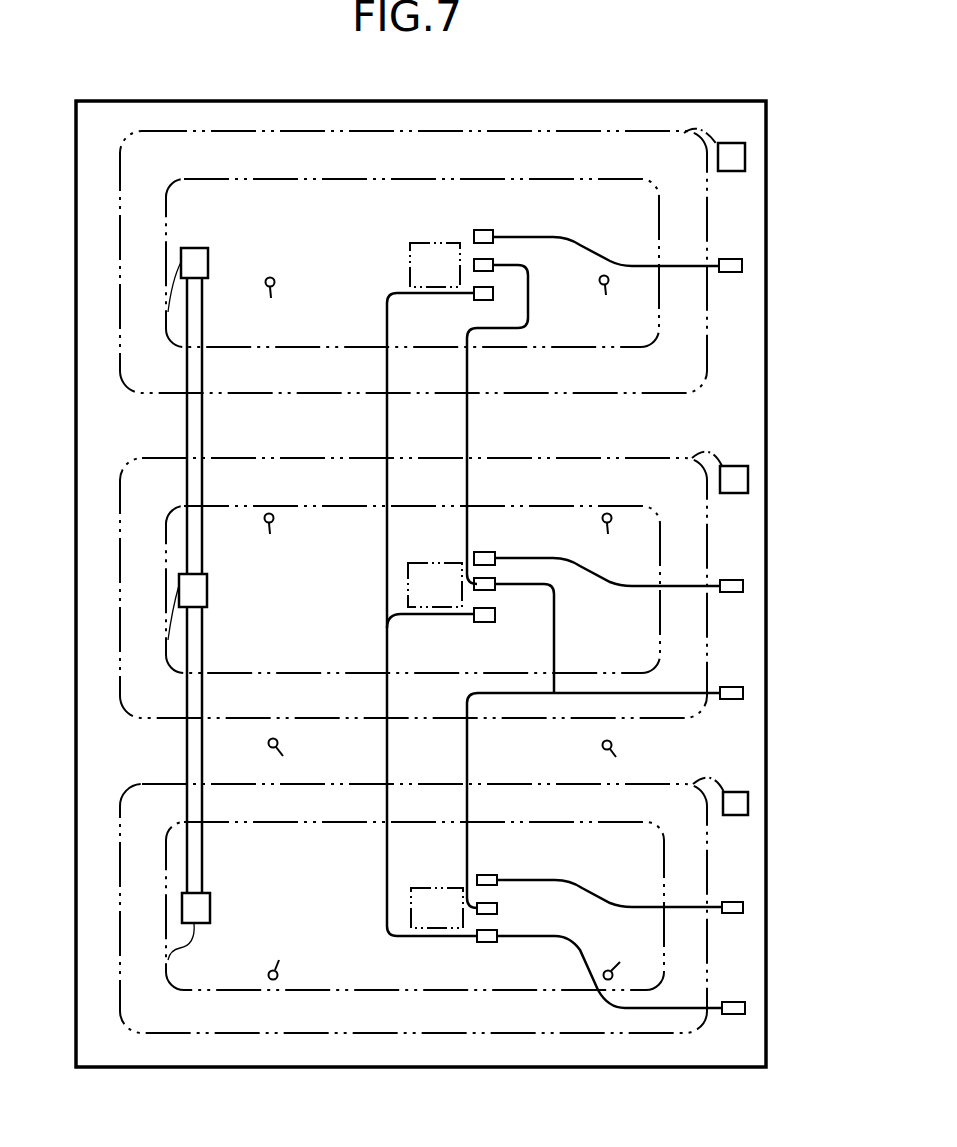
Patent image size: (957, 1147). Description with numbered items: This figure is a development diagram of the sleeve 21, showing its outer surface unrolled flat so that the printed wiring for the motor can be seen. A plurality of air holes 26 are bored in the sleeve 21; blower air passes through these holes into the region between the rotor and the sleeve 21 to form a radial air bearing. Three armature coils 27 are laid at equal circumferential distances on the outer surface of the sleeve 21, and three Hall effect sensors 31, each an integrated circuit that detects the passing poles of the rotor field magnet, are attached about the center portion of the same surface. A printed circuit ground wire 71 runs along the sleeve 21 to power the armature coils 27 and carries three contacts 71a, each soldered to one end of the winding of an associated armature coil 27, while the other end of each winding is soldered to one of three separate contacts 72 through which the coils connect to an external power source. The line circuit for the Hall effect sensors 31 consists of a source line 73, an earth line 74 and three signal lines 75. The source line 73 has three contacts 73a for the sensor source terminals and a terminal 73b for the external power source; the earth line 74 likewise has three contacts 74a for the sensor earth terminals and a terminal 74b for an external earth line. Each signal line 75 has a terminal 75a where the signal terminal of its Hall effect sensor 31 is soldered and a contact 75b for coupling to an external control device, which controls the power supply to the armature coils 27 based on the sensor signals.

The sleeve 21 is at (238, 76).
The air holes 26 is at (451, 628).
The armature coils 27 is at (120, 257).
The Hall effect sensors 31 is at (412, 256).
The printed circuit ground wire 71 is at (202, 431).
The contacts 71a is at (208, 272).
The contacts 72 is at (745, 157).
The source line 73 is at (387, 433).
The contacts 73a is at (484, 300).
The terminal 73b is at (733, 1014).
The earth line 74 is at (467, 433).
The contacts 74a is at (493, 258).
The terminal 74b is at (733, 699).
The signal lines 75 is at (586, 258).
The terminal 75a is at (484, 230).
The contact 75b is at (731, 272).